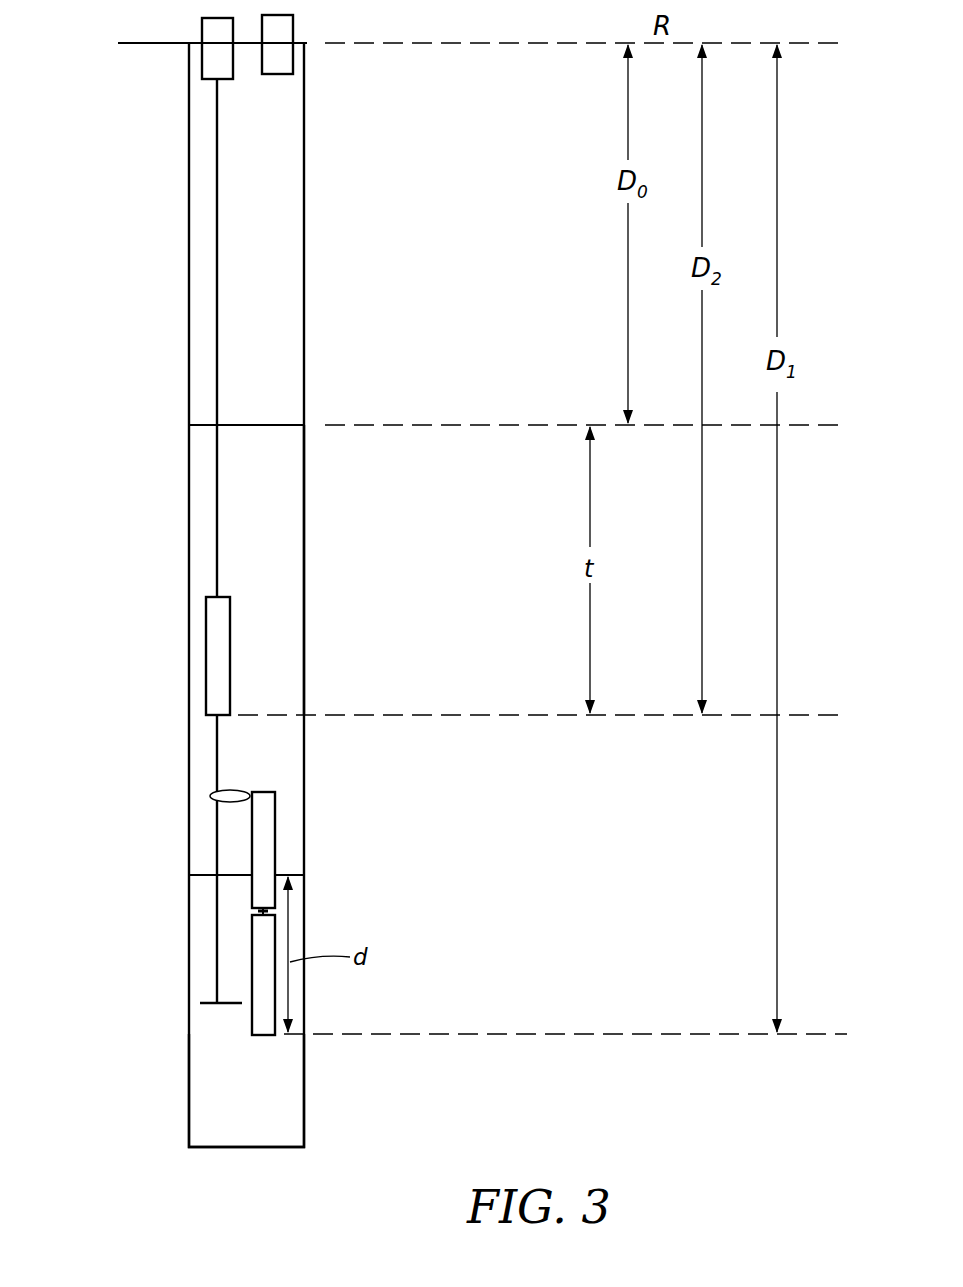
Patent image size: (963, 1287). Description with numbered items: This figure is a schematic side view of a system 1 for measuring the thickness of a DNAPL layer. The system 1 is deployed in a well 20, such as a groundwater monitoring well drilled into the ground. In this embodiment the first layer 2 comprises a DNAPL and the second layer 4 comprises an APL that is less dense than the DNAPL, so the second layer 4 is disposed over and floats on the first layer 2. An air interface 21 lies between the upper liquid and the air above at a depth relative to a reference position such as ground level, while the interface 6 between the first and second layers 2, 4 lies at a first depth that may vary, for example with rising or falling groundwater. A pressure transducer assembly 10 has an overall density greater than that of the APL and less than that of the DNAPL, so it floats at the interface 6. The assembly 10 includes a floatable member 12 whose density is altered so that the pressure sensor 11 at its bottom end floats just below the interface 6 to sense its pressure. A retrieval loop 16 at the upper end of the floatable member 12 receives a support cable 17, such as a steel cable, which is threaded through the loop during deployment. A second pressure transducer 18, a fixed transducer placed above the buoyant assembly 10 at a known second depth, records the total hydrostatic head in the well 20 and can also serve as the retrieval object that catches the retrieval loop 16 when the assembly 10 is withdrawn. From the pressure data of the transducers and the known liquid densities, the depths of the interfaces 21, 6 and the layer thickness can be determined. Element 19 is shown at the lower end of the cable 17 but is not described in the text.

The system 1 is at (390, 221).
The first layer 2 is at (262, 1097).
The second layer 4 is at (280, 546).
The interface 6 is at (212, 874).
The pressure transducer assembly 10 is at (262, 913).
The pressure sensor 11 is at (252, 1032).
The floatable member 12 is at (276, 823).
The retrieval loop 16 is at (212, 795).
The support cable 17 is at (217, 190).
The second pressure transducer 18 is at (206, 620).
The rod end plate 19 is at (210, 1001).
The well 20 is at (189, 112).
The air interface 21 is at (252, 420).